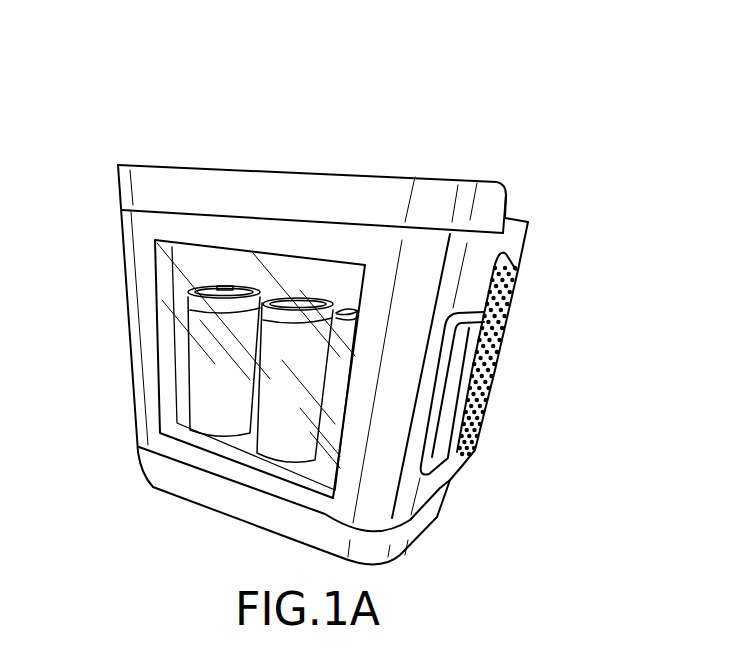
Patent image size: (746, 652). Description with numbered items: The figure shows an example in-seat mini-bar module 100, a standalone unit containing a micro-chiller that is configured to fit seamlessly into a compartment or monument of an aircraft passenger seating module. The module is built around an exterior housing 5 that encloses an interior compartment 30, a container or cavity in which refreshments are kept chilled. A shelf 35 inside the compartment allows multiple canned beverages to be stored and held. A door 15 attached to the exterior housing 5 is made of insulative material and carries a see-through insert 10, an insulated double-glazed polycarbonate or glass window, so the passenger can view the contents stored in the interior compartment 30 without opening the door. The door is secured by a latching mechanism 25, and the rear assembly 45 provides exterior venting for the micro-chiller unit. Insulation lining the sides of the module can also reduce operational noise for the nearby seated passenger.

The in-seat mini-bar module 100 is at (592, 87).
The exterior housing 5 is at (435, 193).
The door 15 is at (480, 265).
The latching mechanism 25 is at (450, 402).
The rear assembly 45 is at (498, 328).
The interior compartment 30 is at (180, 285).
The shelf 35 is at (165, 372).
The insert 10 is at (238, 438).